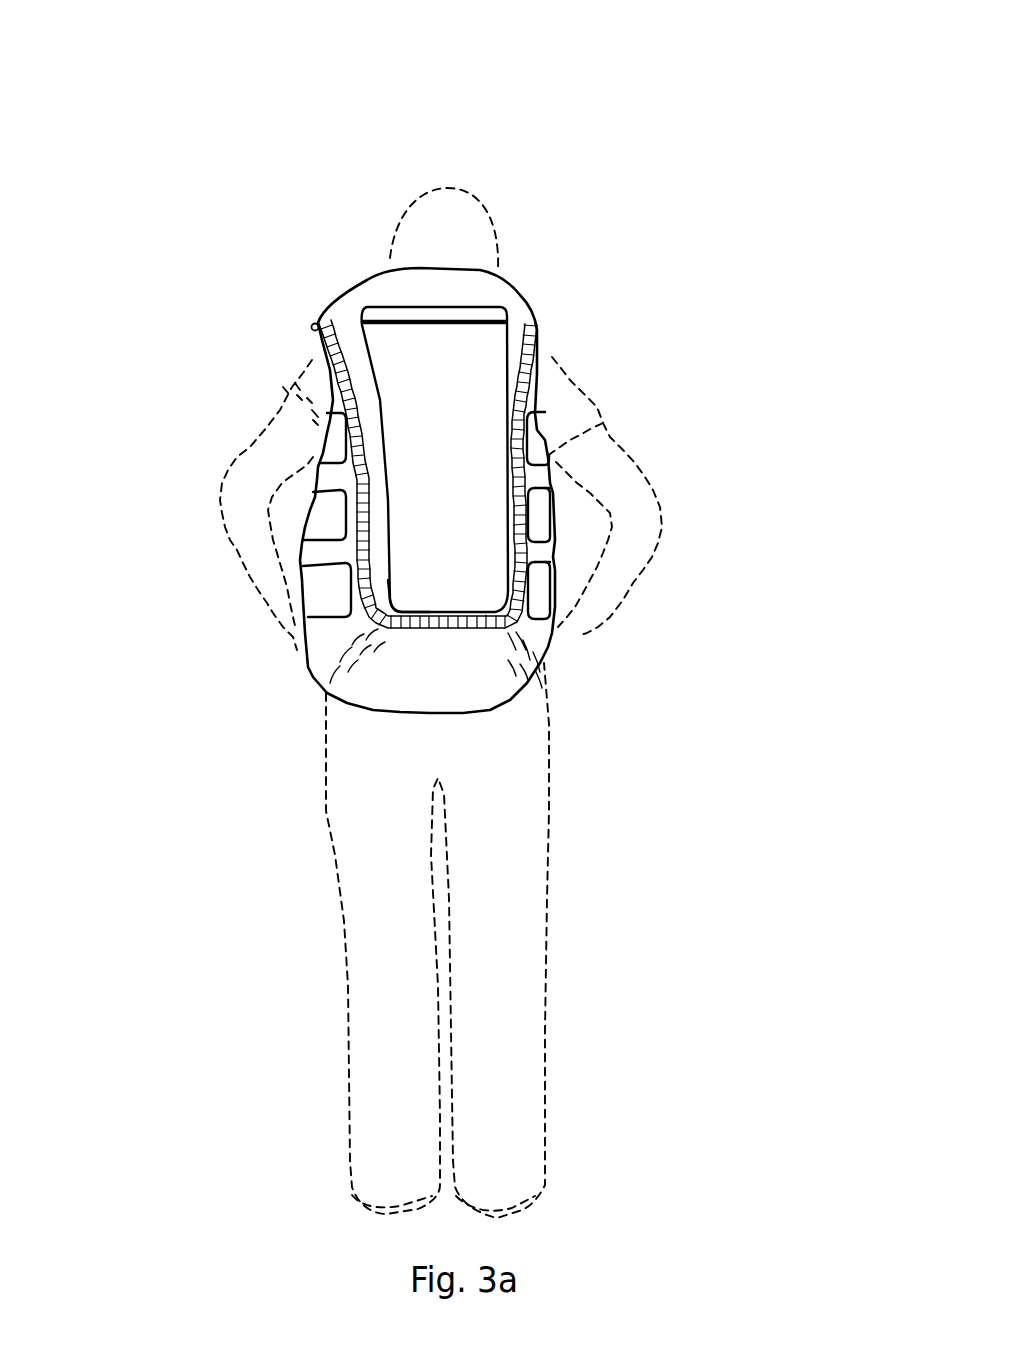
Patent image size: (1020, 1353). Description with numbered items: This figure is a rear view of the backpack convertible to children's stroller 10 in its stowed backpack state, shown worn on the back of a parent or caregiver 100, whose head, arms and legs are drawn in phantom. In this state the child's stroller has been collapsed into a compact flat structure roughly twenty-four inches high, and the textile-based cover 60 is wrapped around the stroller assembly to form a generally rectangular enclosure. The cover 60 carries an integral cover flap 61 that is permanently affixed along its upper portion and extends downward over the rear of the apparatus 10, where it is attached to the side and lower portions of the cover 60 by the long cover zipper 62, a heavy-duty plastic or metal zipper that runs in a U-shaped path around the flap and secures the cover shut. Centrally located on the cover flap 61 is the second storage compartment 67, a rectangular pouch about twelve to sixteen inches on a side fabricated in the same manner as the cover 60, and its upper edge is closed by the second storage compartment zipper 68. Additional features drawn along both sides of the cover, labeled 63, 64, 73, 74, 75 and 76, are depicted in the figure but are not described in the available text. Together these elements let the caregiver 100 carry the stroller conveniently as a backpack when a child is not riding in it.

The backpack convertible to children's stroller 10 is at (710, 158).
The parent or caregiver 100 is at (474, 193).
The cover 60 is at (538, 328).
The cover flap 61 is at (372, 621).
The cover zipper 62 is at (326, 376).
The upper pocket 63 is at (326, 436).
The upper pocket flap 64 is at (328, 415).
The second storage compartment 67 is at (437, 550).
The second storage compartment zipper 68 is at (493, 408).
The middle pocket 73 is at (333, 525).
The middle pocket flap 74 is at (314, 492).
The lower pocket 75 is at (333, 600).
The lower pocket flap 76 is at (303, 569).